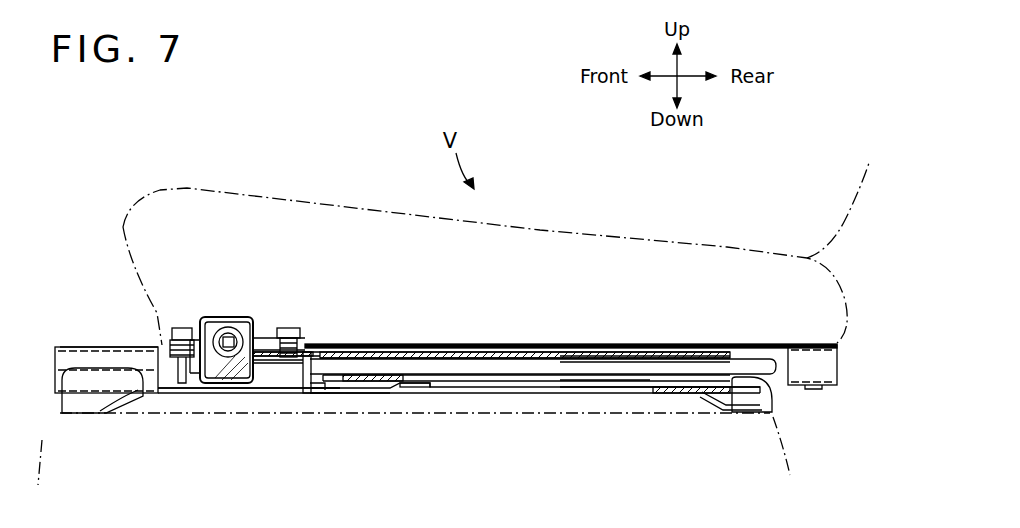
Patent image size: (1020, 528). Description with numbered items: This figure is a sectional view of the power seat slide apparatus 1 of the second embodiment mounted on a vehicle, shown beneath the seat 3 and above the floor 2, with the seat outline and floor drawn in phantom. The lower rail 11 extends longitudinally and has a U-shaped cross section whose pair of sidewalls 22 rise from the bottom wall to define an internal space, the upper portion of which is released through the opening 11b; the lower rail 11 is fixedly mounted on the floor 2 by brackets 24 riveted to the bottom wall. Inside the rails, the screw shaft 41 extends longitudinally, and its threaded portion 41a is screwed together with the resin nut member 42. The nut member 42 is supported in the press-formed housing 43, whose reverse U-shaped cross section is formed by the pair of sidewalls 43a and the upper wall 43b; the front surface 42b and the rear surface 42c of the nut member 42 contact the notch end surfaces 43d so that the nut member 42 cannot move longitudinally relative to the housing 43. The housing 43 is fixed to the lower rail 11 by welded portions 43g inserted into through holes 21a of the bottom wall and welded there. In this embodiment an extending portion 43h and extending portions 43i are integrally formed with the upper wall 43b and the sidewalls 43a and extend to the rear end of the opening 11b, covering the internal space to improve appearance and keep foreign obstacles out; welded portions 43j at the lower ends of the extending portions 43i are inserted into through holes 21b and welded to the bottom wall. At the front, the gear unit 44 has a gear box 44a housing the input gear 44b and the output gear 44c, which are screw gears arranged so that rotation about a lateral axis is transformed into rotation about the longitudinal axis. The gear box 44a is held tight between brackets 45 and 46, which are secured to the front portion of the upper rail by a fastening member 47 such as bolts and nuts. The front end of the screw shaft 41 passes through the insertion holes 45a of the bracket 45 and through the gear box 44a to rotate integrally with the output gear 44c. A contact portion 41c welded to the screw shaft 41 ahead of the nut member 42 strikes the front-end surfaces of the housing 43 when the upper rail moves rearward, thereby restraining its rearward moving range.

The power seat slide apparatus 1 is at (58, 343).
The floor 2 is at (43, 442).
The seat 3 is at (126, 229).
The lower rail 11 is at (544, 394).
The opening 11b is at (95, 346).
The through hole 21a is at (397, 394).
The through hole 21b is at (617, 397).
The sidewalls 22 is at (55, 375).
The brackets 24 is at (117, 418).
The screw shaft 41 is at (638, 355).
The threaded portion 41a is at (597, 364).
The contact portion 41c is at (304, 394).
The nut member 42 is at (681, 344).
The front surface 42b is at (370, 355).
The rear surface 42c is at (400, 358).
The housing 43 is at (380, 399).
The sidewalls 43a is at (316, 398).
The upper wall 43b is at (330, 352).
The notch end surfaces 43d is at (525, 319).
The welded portion 43g is at (330, 393).
The extending portion 43h is at (577, 356).
The extending portions 43i is at (592, 386).
The welded portion 43j is at (638, 395).
The gear unit 44 is at (234, 319).
The gear box 44a is at (246, 327).
The input gear 44b is at (252, 338).
The output gear 44c is at (250, 384).
The bracket 45 is at (290, 356).
The insertion holes 45a is at (210, 395).
The bracket 46 is at (278, 336).
The fastening member 47 is at (183, 328).